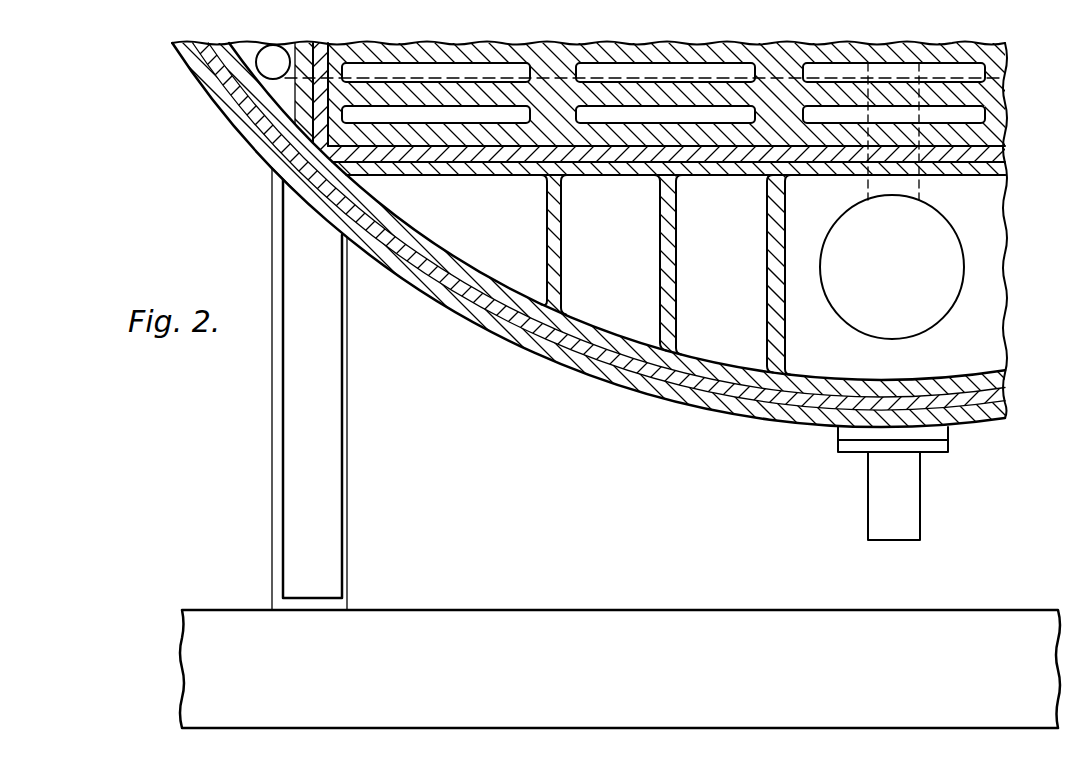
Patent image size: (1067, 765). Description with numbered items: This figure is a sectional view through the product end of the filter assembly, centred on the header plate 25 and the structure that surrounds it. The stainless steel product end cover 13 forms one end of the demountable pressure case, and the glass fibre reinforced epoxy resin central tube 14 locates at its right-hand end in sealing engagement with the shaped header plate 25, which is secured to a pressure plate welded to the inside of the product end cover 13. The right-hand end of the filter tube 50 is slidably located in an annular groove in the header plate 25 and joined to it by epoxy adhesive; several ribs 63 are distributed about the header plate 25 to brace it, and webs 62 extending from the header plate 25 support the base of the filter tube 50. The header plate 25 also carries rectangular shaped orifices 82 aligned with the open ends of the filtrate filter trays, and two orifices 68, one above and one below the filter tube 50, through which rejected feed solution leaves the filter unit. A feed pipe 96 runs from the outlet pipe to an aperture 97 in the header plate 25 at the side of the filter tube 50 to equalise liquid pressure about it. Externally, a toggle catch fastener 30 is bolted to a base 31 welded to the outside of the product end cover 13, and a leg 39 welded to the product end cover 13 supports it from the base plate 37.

The product end cover 13 is at (522, 345).
The central tube 14 is at (567, 342).
The header plate 25 is at (502, 143).
The toggle catch fastener 30 is at (868, 500).
The base 31 is at (949, 436).
The base plate 37 is at (224, 620).
The leg 39 is at (283, 275).
The filter tube 50 is at (335, 164).
The web 62 is at (677, 302).
The rib 63 is at (557, 265).
The orifice 68 is at (843, 312).
The rectangular shaped orifice 82 is at (446, 78).
The feed pipe 96 is at (465, 78).
The aperture 97 is at (265, 66).